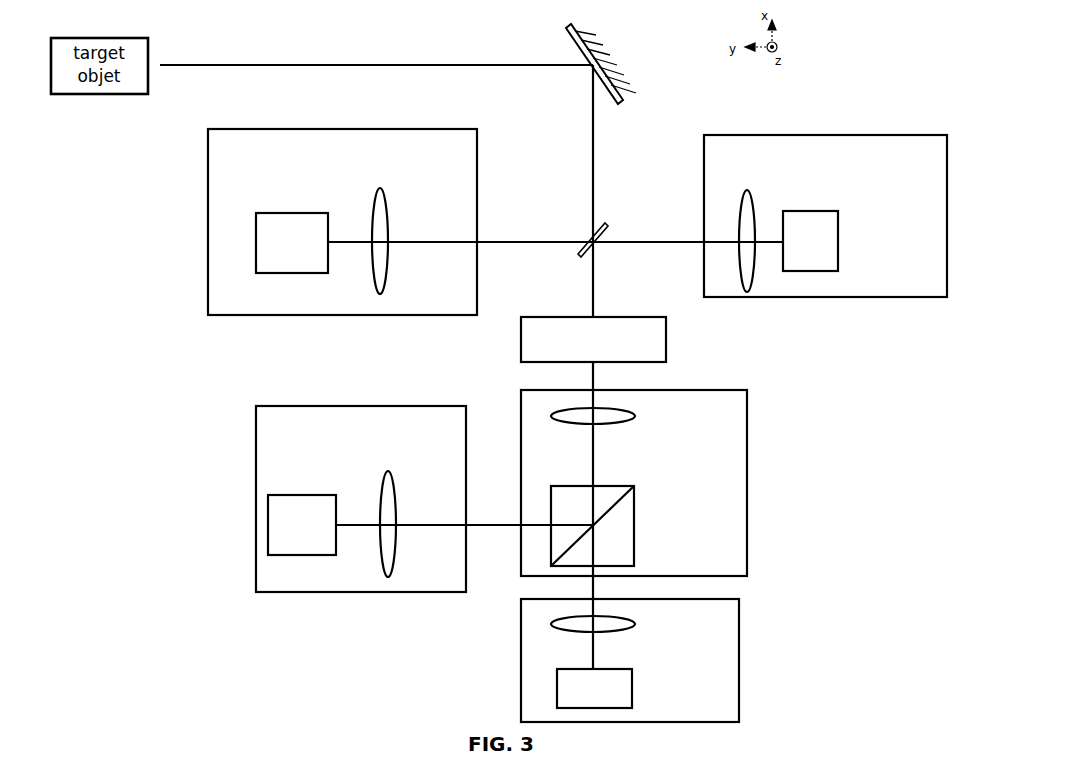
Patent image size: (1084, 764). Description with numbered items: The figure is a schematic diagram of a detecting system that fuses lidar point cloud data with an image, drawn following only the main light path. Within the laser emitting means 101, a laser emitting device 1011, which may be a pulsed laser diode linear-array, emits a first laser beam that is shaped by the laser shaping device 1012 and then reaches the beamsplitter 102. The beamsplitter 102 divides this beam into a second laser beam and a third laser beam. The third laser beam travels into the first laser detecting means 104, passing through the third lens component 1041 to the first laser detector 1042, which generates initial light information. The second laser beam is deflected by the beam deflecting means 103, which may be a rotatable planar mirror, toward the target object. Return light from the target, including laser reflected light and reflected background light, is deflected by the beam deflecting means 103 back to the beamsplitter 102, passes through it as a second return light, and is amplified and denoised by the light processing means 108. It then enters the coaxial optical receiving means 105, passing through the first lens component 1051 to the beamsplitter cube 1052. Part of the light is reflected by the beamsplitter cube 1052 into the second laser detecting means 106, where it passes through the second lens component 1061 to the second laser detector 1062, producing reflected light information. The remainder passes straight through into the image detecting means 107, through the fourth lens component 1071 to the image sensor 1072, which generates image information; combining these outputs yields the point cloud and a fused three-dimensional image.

The laser emitting means 101 is at (206, 163).
The laser emitting device 1011 is at (259, 212).
The laser shaping device 1012 is at (388, 190).
The beamsplitter 102 is at (607, 228).
The beam deflecting means 103 is at (612, 50).
The first laser detecting means 104 is at (806, 133).
The third lens component 1041 is at (748, 190).
The first laser detector 1042 is at (840, 216).
The coaxial optical receiving means 105 is at (749, 449).
The first lens component 1051 is at (634, 416).
The beamsplitter cube 1052 is at (636, 527).
The second laser detecting means 106 is at (253, 452).
The second lens component 1061 is at (390, 471).
The second laser detector 1062 is at (272, 493).
The image detecting means 107 is at (741, 650).
The fourth lens component 1071 is at (634, 624).
The image sensor 1072 is at (633, 684).
The light processing means 108 is at (668, 325).